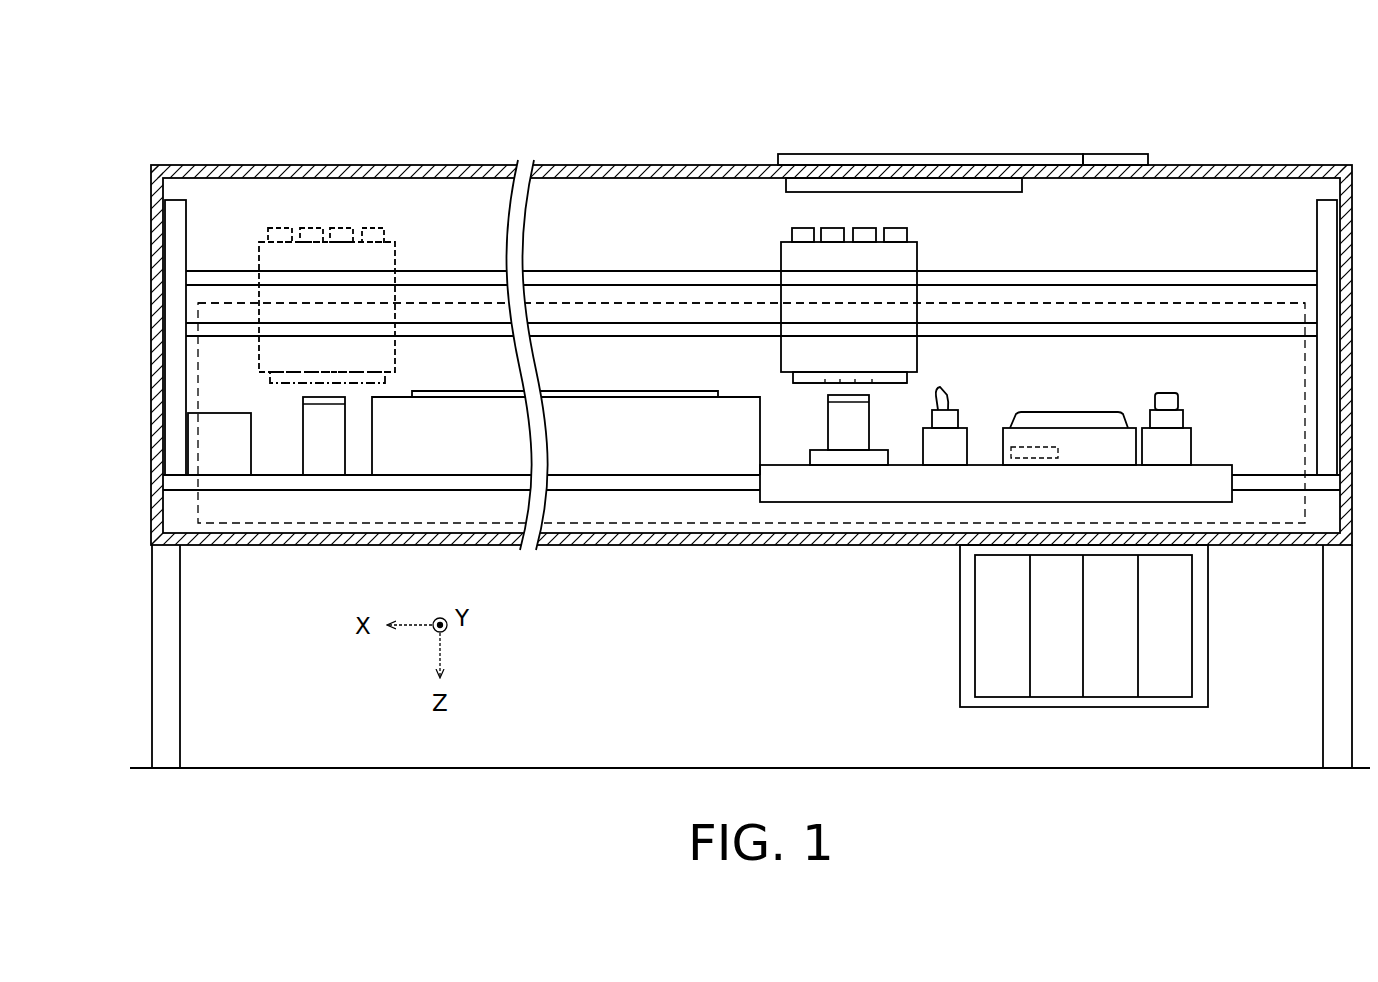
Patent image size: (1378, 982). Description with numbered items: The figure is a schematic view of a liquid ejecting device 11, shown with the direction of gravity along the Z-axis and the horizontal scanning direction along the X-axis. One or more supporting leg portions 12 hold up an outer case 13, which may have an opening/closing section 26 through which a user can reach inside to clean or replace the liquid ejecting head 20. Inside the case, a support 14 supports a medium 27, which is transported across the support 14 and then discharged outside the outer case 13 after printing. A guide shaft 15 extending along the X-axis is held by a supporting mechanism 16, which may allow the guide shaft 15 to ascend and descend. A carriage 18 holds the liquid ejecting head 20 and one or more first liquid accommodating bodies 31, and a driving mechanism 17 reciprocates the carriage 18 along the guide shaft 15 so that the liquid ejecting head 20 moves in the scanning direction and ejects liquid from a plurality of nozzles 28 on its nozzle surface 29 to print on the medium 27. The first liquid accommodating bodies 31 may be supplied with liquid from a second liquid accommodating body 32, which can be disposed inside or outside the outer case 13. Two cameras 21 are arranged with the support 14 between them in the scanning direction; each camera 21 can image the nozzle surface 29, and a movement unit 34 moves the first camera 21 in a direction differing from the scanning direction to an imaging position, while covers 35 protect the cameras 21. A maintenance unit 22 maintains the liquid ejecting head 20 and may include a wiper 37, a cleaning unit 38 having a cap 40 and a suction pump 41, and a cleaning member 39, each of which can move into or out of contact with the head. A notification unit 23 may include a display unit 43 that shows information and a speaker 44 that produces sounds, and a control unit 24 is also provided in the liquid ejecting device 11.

The liquid ejecting device 11 is at (206, 116).
The supporting leg portion 12 is at (180, 717).
The outer case 13 is at (278, 545).
The support 14 is at (366, 465).
The guide shaft 15 is at (558, 278).
The supporting mechanism 16 is at (186, 226).
The driving mechanism 17 is at (220, 413).
The carriage 18 is at (395, 257).
The liquid ejecting head 20 is at (386, 379).
The camera 21 is at (828, 432).
The maintenance unit 22 is at (1243, 386).
The notification unit 23 is at (963, 114).
The control unit 24 is at (1024, 185).
The opening/closing section 26 is at (1180, 303).
The medium 27 is at (615, 391).
The nozzle 28 is at (840, 382).
The nozzle surface 29 is at (870, 383).
The first liquid accommodating body 31 is at (378, 228).
The second liquid accommodating body 32 is at (1118, 697).
The movement unit 34 is at (883, 451).
The cover 35 is at (372, 398).
The wiper 37 is at (950, 398).
The cleaning unit 38 is at (1069, 403).
The cleaning member 39 is at (1183, 401).
The cap 40 is at (1083, 413).
The suction pump 41 is at (1035, 418).
The display unit 43 is at (1064, 153).
The speaker 44 is at (1115, 134).